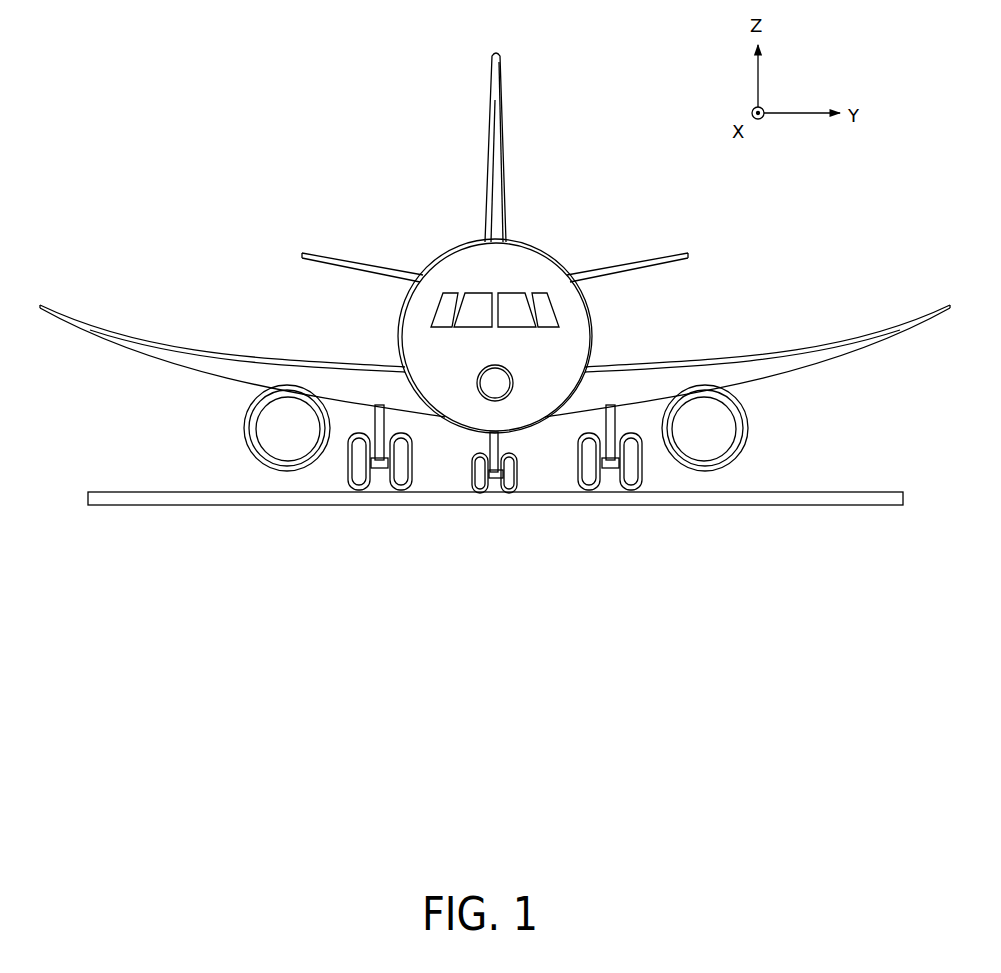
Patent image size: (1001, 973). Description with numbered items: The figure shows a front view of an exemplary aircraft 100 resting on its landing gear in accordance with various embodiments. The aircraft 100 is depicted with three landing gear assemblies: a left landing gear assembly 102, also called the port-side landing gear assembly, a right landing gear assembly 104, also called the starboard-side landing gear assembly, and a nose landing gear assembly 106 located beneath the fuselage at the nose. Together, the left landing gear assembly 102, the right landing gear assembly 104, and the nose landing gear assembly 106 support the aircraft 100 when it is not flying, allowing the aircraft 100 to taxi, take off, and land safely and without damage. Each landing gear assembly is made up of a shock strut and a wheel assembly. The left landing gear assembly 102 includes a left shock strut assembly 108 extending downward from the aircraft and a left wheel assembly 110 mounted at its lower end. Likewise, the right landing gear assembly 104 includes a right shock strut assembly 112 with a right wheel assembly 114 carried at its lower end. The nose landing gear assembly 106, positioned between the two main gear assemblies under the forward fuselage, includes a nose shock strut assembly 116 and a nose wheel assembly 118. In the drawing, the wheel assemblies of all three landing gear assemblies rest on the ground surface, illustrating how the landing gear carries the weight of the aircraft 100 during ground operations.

The aircraft 100 is at (337, 153).
The left landing gear assembly 102 is at (673, 480).
The right landing gear assembly 104 is at (360, 413).
The nose landing gear assembly 106 is at (458, 480).
The left shock strut assembly 108 is at (605, 422).
The left wheel assembly 110 is at (610, 465).
The right shock strut assembly 112 is at (378, 450).
The right wheel assembly 114 is at (380, 468).
The nose shock strut assembly 116 is at (498, 433).
The nose wheel assembly 118 is at (496, 478).